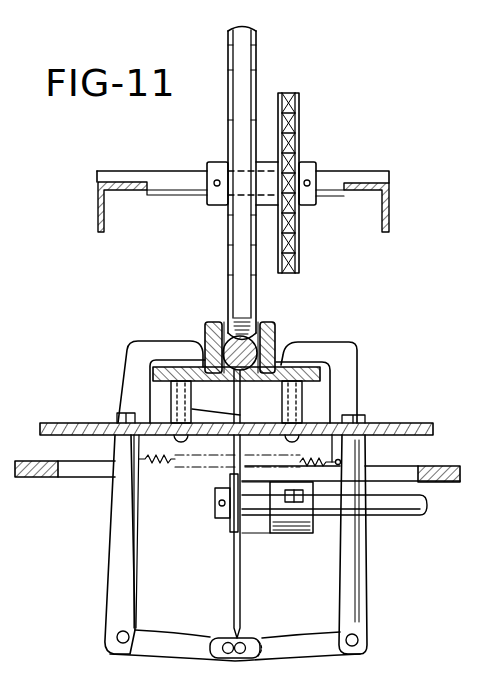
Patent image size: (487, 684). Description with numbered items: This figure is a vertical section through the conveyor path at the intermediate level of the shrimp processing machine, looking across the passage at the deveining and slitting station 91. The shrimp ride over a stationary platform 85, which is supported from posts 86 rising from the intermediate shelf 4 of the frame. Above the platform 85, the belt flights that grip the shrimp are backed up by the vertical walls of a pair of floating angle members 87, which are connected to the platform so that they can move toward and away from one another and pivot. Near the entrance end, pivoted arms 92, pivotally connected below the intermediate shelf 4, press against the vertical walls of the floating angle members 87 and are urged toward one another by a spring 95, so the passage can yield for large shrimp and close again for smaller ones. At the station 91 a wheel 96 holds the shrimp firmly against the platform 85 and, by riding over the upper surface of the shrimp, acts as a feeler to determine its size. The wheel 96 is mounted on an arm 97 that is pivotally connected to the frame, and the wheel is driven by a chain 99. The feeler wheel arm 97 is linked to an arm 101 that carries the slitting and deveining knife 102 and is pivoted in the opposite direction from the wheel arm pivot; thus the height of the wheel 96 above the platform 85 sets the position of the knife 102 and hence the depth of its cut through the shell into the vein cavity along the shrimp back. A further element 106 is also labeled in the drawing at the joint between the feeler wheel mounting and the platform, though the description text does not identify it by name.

The intermediate shelf 4 is at (416, 423).
The platform 85 is at (320, 392).
The posts 86 is at (283, 407).
The floating angle members 87 is at (205, 338).
The deveining and slitting station 91 is at (272, 296).
The pivoted arms 92 is at (124, 377).
The spring 95 is at (172, 462).
The wheel 96 is at (257, 60).
The arm 97 is at (390, 203).
The chain 99 is at (301, 128).
The arm 101 is at (447, 467).
The slitting and deveining knife 102 is at (233, 582).
The ball 106 is at (235, 382).